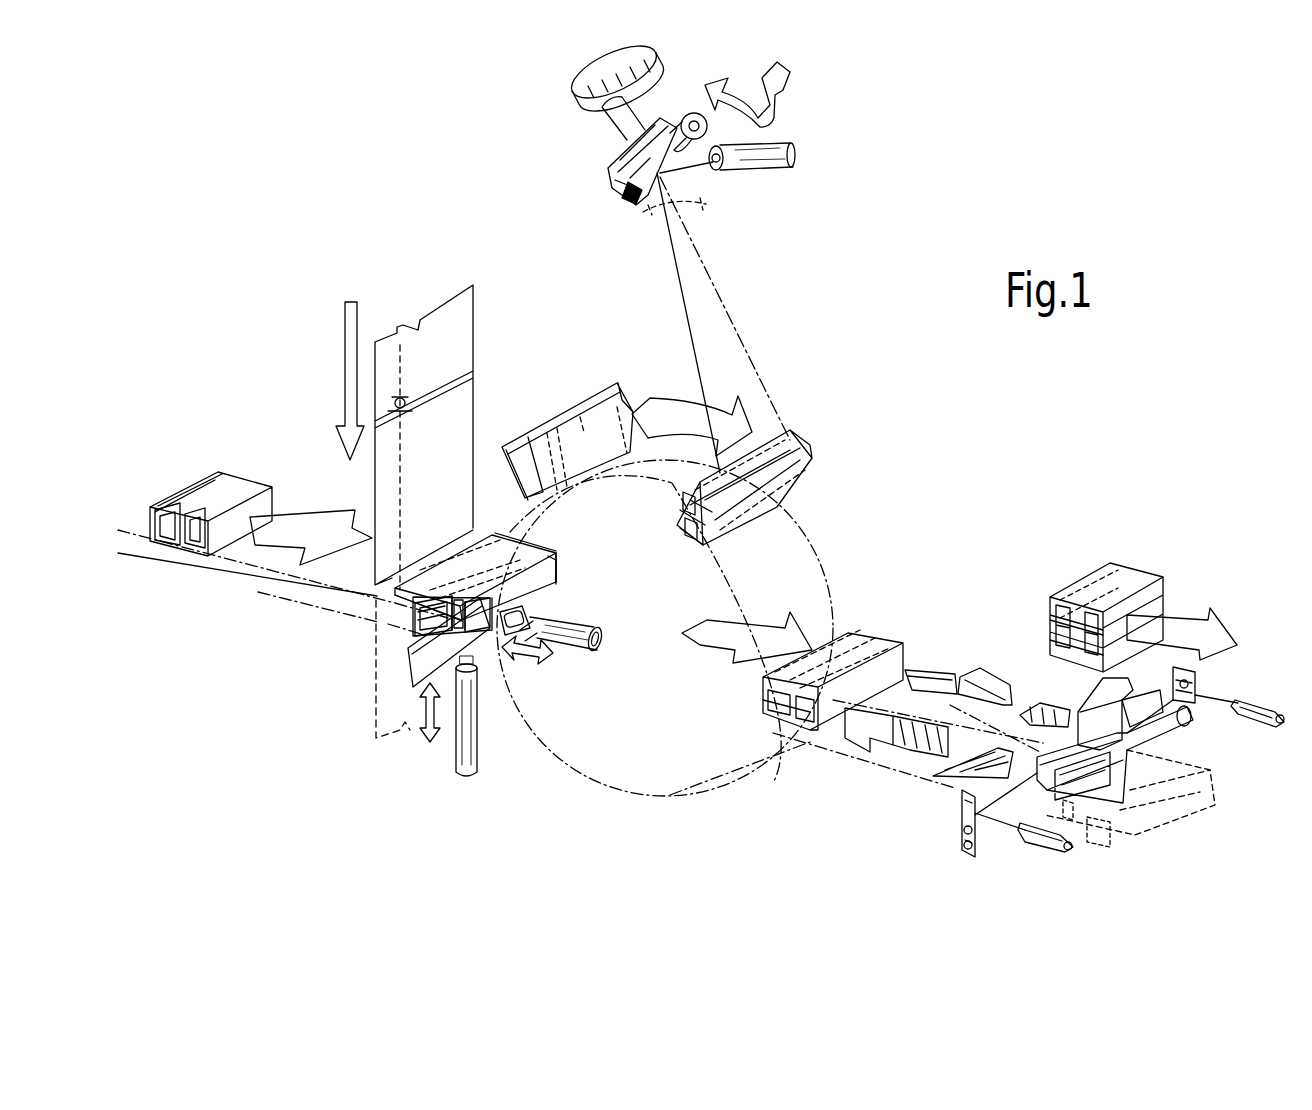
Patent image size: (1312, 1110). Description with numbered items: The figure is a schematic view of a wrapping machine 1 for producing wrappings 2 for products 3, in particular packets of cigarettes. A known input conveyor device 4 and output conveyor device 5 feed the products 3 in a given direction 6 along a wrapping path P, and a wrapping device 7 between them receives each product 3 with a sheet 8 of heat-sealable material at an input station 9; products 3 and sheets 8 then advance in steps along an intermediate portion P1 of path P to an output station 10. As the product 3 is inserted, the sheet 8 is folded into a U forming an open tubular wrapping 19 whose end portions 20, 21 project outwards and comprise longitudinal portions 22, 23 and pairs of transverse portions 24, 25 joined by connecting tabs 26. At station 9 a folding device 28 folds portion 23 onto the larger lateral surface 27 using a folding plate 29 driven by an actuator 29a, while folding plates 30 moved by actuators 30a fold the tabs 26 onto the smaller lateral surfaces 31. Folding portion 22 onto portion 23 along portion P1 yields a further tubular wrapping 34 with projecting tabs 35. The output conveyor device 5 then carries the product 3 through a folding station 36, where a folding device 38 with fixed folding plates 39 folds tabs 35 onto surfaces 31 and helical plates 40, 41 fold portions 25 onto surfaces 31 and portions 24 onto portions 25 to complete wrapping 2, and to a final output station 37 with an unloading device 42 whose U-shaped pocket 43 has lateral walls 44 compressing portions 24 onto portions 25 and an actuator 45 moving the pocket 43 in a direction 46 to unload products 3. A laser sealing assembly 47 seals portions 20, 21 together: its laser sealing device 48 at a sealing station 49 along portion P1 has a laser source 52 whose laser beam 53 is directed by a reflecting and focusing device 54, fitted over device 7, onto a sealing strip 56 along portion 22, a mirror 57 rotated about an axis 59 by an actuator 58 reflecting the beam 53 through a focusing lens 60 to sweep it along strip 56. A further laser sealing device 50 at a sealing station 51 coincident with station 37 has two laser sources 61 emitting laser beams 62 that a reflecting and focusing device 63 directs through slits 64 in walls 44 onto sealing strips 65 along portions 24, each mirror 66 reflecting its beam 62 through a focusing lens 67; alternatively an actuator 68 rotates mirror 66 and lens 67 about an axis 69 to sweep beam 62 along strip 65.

The wrapping machine 1 is at (906, 146).
The wrapping 2 is at (1108, 580).
The product 3 is at (212, 476).
The input conveyor device 4 is at (218, 590).
The output conveyor device 5 is at (868, 808).
The given direction 6 is at (306, 513).
The wrapping device 7 is at (542, 766).
The sheet of heat-sealable wrapping material 8 is at (475, 357).
The input station 9 is at (361, 668).
The output station 10 is at (796, 765).
The open tubular wrapping 19 is at (536, 601).
The end portion 20 is at (521, 542).
The end portion 21 is at (410, 622).
The longitudinal portion 22 is at (467, 560).
The longitudinal portion 23 is at (430, 612).
The transverse portions 24 is at (620, 392).
The transverse portions 25 is at (520, 470).
The intermediate connecting tab 26 is at (686, 540).
The larger lateral surface 27 is at (170, 486).
The folding device 28 is at (400, 740).
The folding plate 29 is at (432, 740).
The actuator 29a is at (460, 758).
The folding plates 30 is at (539, 652).
The actuator 30a is at (531, 618).
The smaller lateral surface 31 is at (240, 482).
The further tubular wrapping 34 is at (636, 395).
The tabs 35 is at (785, 432).
The folding station 36 is at (887, 775).
The final output station 37 is at (1190, 810).
The folding device 38 is at (912, 815).
The fixed folding plates 39 is at (935, 668).
The helical plates 40 is at (913, 748).
The helical plates 41 is at (958, 780).
The unloading device 42 is at (1205, 792).
The U-shaped pocket 43 is at (1195, 762).
The lateral walls 44 is at (1200, 740).
The actuator 45 is at (1125, 815).
The direction 46 is at (1105, 690).
The laser sealing assembly 47 is at (776, 128).
The laser sealing device 48 is at (686, 72).
The sealing station 49 is at (770, 332).
The further laser sealing device 50 is at (1088, 858).
The sealing station 51 is at (1045, 852).
The laser source 52 is at (754, 168).
The laser beam 53 is at (676, 262).
The reflecting and focusing device 54 is at (627, 212).
The sealing strip 56 is at (825, 440).
The mirror 57 is at (626, 180).
The actuator 58 is at (704, 146).
The axis 59 is at (748, 78).
The focusing lens 60 is at (700, 206).
The laser sources 61 is at (1072, 850).
The laser beams 62 is at (1005, 822).
The reflecting and focusing device 63 is at (936, 838).
The slits 64 is at (1050, 745).
The sealing strips 65 is at (1103, 828).
The mirror 66 is at (966, 846).
The focusing lens 67 is at (1000, 758).
The actuator 68 is at (972, 850).
The axis 69 is at (1023, 846).
The wrapping path P is at (262, 578).
The intermediate portion of path P1 is at (823, 575).